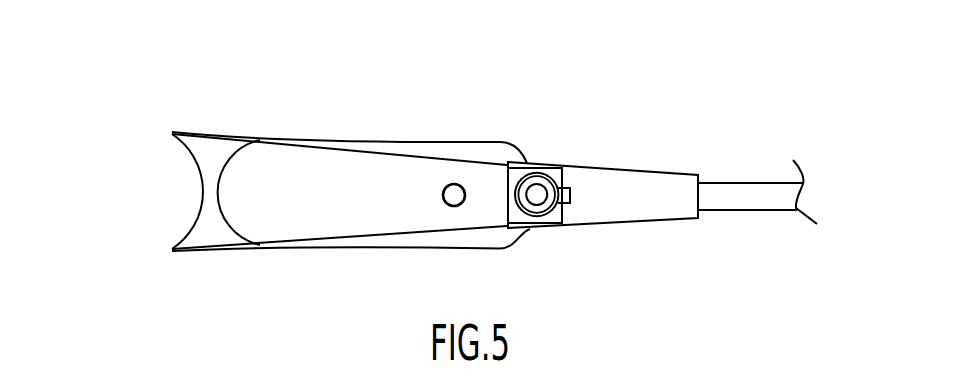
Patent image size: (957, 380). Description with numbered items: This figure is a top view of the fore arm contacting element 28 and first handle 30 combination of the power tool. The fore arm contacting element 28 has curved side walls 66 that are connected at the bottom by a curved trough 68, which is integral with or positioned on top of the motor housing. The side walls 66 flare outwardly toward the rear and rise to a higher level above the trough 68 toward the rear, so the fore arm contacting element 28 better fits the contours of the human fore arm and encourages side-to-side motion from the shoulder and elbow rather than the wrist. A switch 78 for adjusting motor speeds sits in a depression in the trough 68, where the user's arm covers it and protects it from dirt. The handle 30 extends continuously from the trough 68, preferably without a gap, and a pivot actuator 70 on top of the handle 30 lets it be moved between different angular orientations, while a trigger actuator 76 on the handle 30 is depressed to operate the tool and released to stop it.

The fore arm contacting element 28 is at (130, 194).
The side walls 66 is at (172, 131).
The trough 68 is at (322, 193).
The switch 78 is at (449, 184).
The first handle 30 is at (549, 175).
The pivot actuator 70 is at (537, 194).
The trigger actuator 76 is at (570, 195).